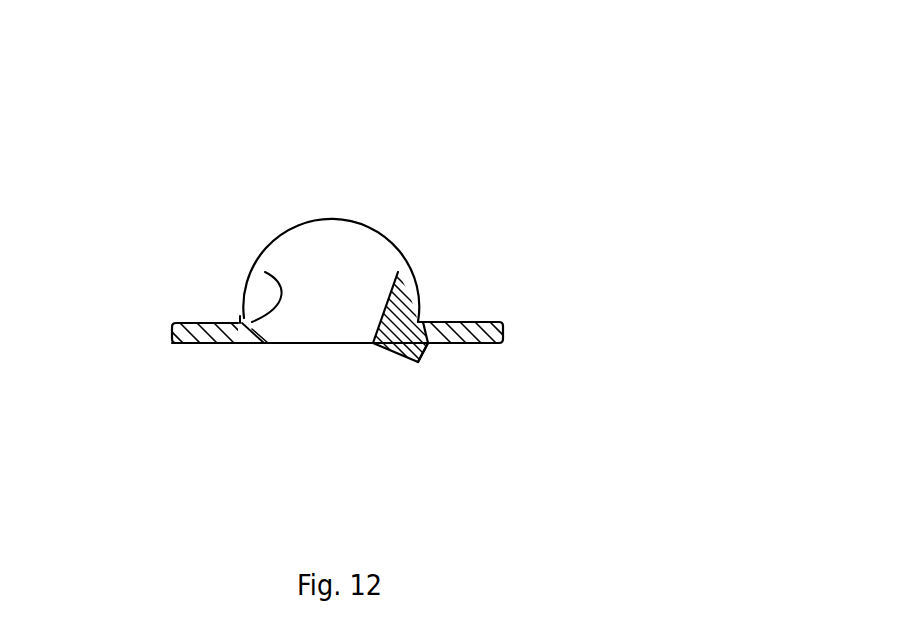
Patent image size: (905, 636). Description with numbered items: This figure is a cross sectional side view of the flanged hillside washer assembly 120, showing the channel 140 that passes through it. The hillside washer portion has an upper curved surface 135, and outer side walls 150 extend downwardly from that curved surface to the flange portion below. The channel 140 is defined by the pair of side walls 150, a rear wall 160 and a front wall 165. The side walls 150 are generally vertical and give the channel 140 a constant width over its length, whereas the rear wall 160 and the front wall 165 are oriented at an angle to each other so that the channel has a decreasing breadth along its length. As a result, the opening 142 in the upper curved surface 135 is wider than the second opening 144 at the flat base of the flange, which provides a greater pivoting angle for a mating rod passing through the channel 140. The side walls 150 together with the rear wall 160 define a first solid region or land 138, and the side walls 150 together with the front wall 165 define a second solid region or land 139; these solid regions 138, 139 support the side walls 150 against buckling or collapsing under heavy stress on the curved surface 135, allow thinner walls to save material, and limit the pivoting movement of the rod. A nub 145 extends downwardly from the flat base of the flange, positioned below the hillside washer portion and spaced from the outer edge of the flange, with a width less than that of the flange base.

The flanged hillside washer assembly 120 is at (452, 110).
The upper curved surface 135 is at (330, 241).
The first solid region or land 138 is at (403, 311).
The second solid region or land 139 is at (241, 320).
The channel 140 is at (322, 293).
The opening 142 is at (302, 257).
The second opening 144 is at (320, 328).
The nub 145 is at (427, 360).
The side walls 150 is at (293, 252).
The rear wall 160 is at (388, 311).
The front wall 165 is at (265, 272).